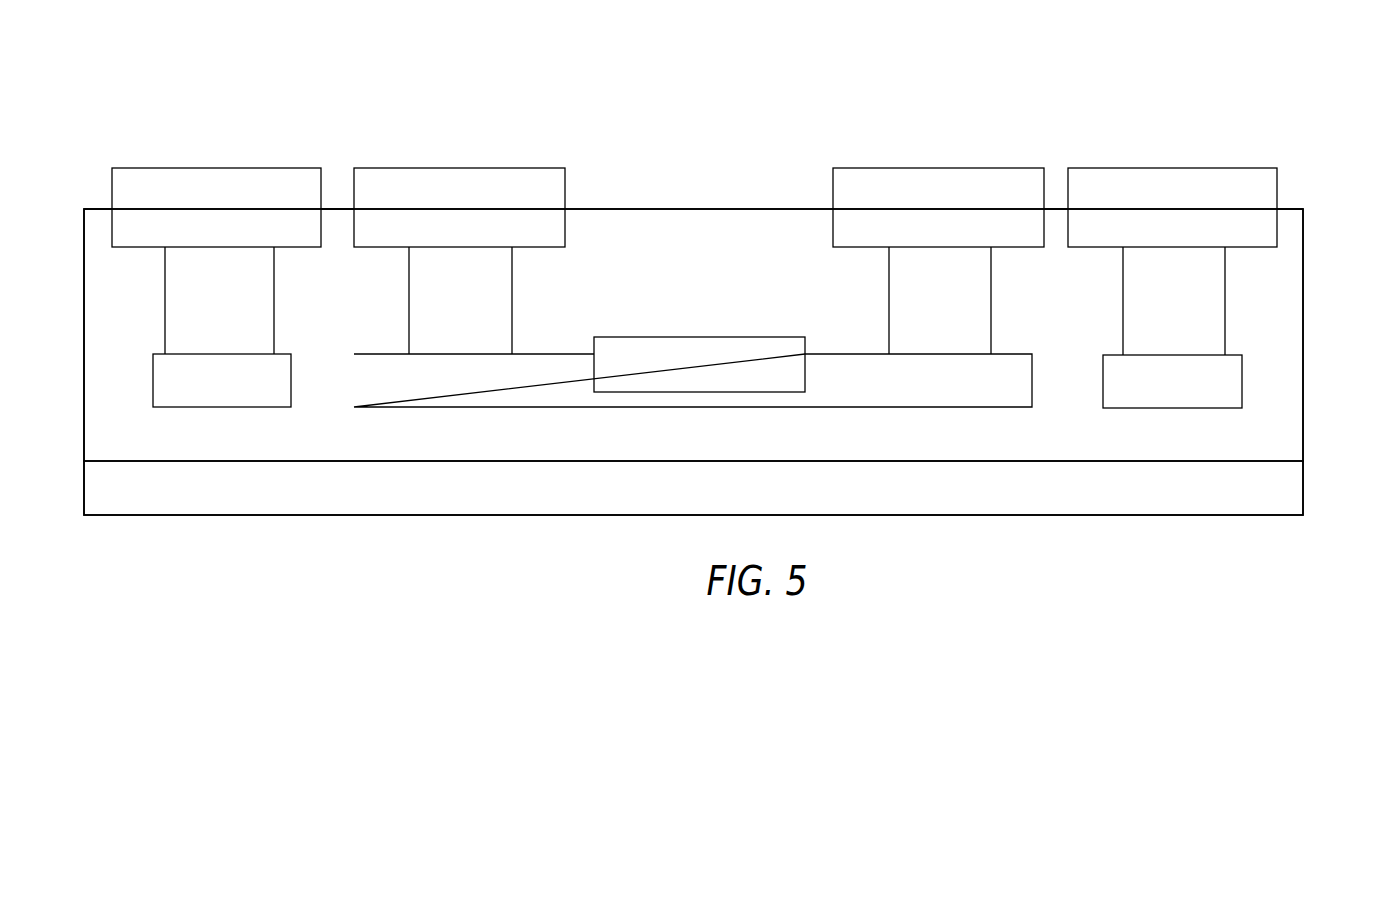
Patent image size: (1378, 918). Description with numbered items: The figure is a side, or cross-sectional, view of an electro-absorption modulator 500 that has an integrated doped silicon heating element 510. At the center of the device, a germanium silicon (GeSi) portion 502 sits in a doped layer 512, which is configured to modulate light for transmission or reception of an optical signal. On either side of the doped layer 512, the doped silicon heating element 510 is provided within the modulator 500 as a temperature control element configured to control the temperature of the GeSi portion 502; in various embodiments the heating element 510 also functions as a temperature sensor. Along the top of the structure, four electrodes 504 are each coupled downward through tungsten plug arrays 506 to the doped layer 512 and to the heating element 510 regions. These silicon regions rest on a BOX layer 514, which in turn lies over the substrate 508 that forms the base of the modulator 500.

The electro-absorption modulator 500 is at (1278, 141).
The germanium silicon (GeSi) portion 502 is at (612, 336).
The electrodes 504 is at (126, 168).
The tungsten plug arrays 506 is at (275, 340).
The substrate 508 is at (1303, 498).
The doped silicon heating element 510 is at (153, 359).
The doped layer 512 is at (851, 353).
The BOX layer 514 is at (1303, 221).